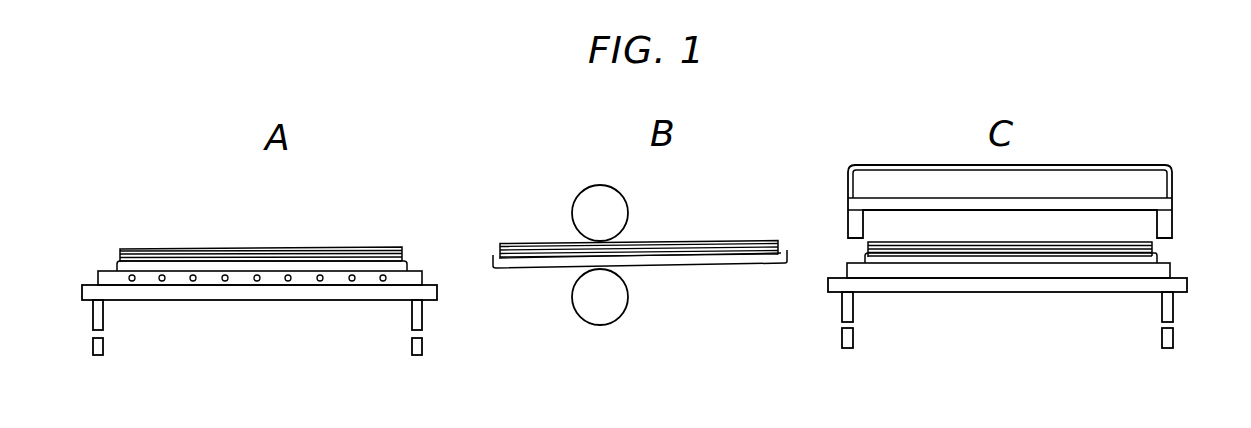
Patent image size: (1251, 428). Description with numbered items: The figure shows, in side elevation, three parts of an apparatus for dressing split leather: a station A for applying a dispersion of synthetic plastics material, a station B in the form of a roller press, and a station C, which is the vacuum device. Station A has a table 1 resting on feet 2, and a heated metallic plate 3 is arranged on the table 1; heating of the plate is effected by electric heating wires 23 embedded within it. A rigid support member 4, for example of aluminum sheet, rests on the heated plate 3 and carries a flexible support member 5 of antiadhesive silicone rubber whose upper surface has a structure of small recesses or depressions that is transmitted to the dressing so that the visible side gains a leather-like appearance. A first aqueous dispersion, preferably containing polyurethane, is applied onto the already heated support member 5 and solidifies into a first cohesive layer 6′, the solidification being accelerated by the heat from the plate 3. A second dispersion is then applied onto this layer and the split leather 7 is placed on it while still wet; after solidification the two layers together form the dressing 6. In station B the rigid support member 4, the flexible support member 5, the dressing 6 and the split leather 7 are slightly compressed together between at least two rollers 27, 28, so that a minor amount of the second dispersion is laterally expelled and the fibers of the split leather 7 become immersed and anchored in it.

The table 1 is at (363, 291).
The feet 2 is at (422, 313).
The heated metallic plate 3 is at (337, 279).
The rigid support member 4 is at (308, 266).
The flexible support member 5 is at (405, 262).
The dressing 6 is at (765, 248).
The first cohesive layer 6′ is at (398, 254).
The split leather 7 is at (327, 248).
The electric heating wires 23 is at (223, 283).
The roller 27 is at (608, 212).
The roller 28 is at (613, 298).